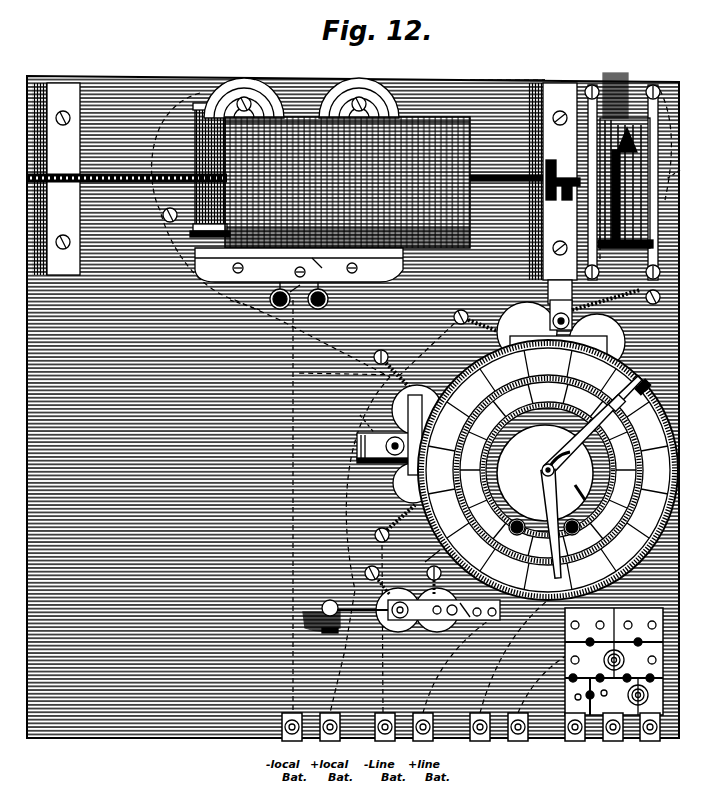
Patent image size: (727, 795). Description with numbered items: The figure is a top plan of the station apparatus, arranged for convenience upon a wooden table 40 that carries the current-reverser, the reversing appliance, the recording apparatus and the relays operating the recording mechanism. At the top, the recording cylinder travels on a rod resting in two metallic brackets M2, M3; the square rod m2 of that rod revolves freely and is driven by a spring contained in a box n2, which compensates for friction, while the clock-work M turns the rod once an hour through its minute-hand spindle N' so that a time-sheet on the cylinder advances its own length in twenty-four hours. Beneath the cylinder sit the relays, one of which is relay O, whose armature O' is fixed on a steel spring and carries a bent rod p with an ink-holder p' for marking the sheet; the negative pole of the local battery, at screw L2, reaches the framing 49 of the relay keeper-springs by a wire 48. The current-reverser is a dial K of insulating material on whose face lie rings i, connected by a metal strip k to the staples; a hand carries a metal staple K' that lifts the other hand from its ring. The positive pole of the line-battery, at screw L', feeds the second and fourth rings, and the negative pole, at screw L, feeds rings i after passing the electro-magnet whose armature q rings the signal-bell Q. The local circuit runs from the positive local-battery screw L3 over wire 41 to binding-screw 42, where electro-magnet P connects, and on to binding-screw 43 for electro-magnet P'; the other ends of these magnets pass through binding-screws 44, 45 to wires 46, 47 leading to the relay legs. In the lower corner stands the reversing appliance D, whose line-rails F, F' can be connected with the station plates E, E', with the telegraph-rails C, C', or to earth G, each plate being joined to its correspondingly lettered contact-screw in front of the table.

The wooden table 40 is at (353, 407).
The wire 41 is at (366, 420).
The binding-screw 42 is at (387, 523).
The binding-screw 43 is at (393, 401).
The binding-screw 44 is at (393, 364).
The binding-screw 45 is at (436, 420).
The wire 46 is at (163, 185).
The wire 47 is at (470, 373).
The wire 48 is at (238, 301).
The metallic framing 49 is at (299, 265).
The clock-work M is at (622, 166).
The metallic bracket M2 is at (554, 193).
The metallic bracket M3 is at (56, 179).
The square rod m2 is at (286, 170).
The minute-hand spindle N' is at (682, 167).
The relay O is at (210, 170).
The armature O' is at (327, 98).
The spring box n2 is at (564, 173).
The electro-magnet P is at (399, 444).
The electro-magnet P' is at (578, 330).
The bent rod p is at (293, 263).
The ink-holder p' is at (299, 300).
The ring i is at (560, 463).
The dial K is at (548, 470).
The metal staple K' is at (576, 490).
The metal strip k is at (528, 495).
The armature q is at (432, 599).
The signal-bell Q is at (342, 618).
The reversing appliance D is at (629, 661).
The plate E is at (587, 627).
The plate E' is at (640, 627).
The line-rail F is at (597, 660).
The line-rail F' is at (643, 662).
The earth plate G is at (594, 698).
The terminal G' is at (645, 695).
The local battery negative contact-screw L2 is at (292, 736).
The local battery positive contact-screw L3 is at (330, 736).
The line-battery negative contact-screw L is at (385, 736).
The line-battery positive contact-screw L' is at (423, 736).
The telegraph contact-screw C is at (527, 736).
The telegraph contact-screw C' is at (631, 736).